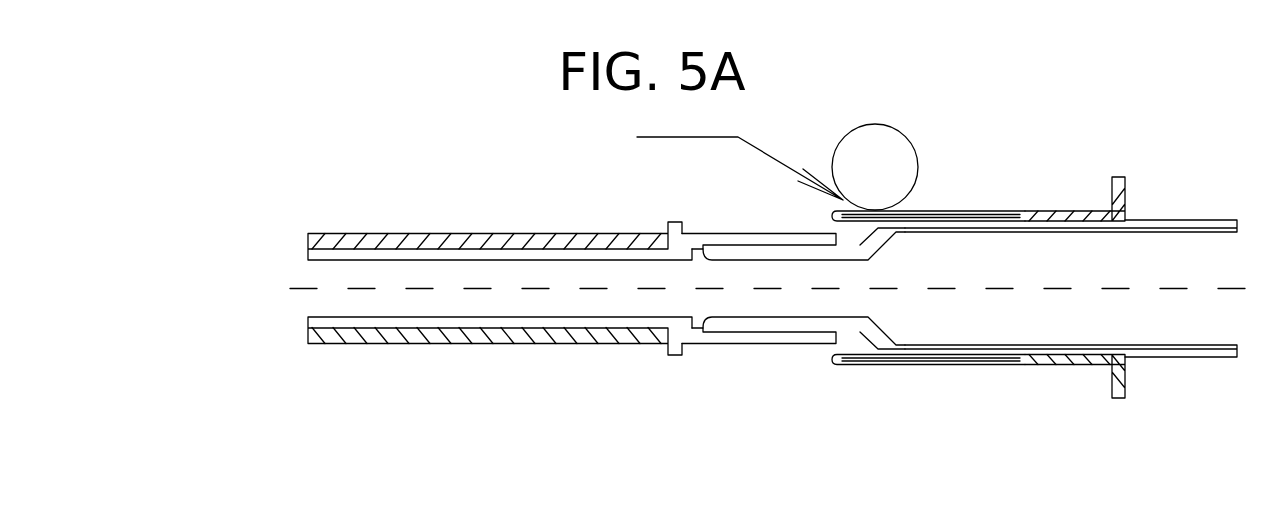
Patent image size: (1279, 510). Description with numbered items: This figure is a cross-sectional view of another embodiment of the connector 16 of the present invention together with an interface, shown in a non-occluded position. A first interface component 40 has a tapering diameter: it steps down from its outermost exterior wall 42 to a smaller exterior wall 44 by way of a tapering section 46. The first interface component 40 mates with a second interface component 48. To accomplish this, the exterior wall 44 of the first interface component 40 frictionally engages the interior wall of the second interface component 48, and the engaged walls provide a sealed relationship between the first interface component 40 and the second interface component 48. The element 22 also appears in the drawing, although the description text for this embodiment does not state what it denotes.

The inflatable balloon 16 is at (1065, 211).
The ball 22 is at (848, 131).
The inner tubular member 40 is at (847, 324).
The distal shaft section 42 is at (935, 350).
The inner tube 44 is at (737, 322).
The transition section 46 is at (875, 338).
The sleeve 48 is at (728, 236).